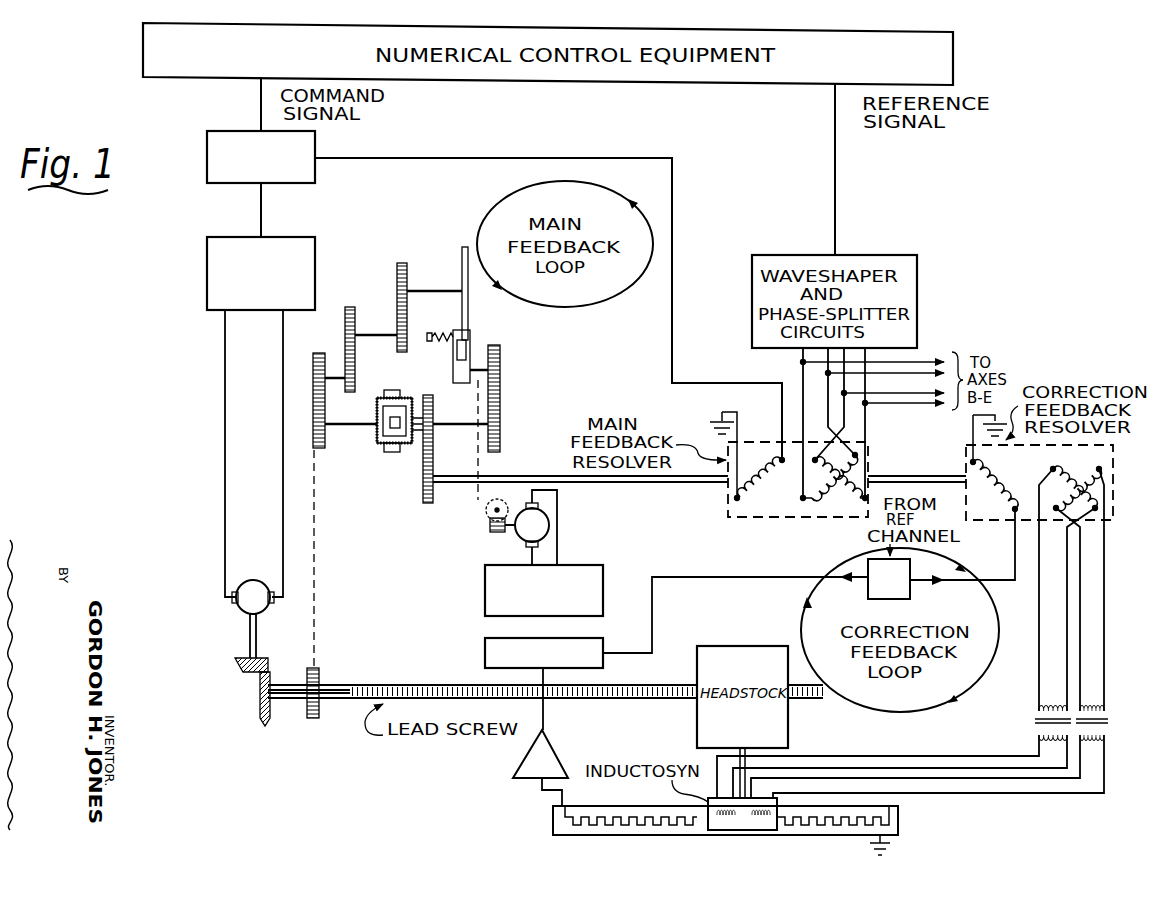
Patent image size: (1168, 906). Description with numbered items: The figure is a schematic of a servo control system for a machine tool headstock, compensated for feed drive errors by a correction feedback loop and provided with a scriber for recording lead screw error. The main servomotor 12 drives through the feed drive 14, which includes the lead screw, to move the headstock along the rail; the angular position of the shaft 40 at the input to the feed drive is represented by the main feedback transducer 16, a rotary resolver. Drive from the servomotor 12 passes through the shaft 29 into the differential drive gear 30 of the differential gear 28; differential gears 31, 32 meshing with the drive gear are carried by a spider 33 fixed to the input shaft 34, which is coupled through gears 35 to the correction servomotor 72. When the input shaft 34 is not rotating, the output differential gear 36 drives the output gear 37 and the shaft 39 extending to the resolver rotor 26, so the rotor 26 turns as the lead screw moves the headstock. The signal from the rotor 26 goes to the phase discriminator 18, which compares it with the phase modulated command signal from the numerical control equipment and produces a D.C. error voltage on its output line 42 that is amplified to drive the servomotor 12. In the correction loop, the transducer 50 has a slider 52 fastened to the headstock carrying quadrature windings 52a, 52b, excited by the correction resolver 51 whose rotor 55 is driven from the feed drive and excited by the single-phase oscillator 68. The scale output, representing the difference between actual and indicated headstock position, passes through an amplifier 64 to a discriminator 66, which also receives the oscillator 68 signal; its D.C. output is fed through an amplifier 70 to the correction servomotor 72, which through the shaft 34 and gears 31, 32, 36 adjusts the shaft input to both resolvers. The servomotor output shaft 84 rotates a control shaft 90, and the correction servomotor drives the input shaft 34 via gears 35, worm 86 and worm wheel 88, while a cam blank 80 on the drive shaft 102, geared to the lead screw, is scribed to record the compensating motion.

The servomotor 12 is at (232, 607).
The feed drive 14 is at (294, 723).
The main feedback transducer 16 is at (789, 487).
The phase discriminator 18 is at (316, 150).
The resolver rotor 26 is at (799, 483).
The differential gear 28 is at (380, 439).
The shaft 29 is at (333, 424).
The differential drive gear 30 is at (372, 435).
The differential gear 31 is at (378, 444).
The differential gear 32 is at (382, 399).
The spider 33 is at (398, 452).
The input shaft 34 is at (443, 426).
The gears 35 is at (444, 405).
The output differential gear 36 is at (412, 400).
The output gear 37 is at (428, 392).
The shaft 39 is at (536, 474).
The shaft 40 is at (247, 638).
The output line 42 is at (262, 218).
The transducer 50 is at (796, 793).
The correction resolver 51 is at (1017, 467).
The slider 52 is at (750, 829).
The winding 52a is at (728, 822).
The winding 52b is at (762, 822).
The rotor 55 is at (996, 484).
The amplifier 64 is at (513, 772).
The discriminator 66 is at (485, 652).
The single-phase oscillator 68 is at (868, 590).
The amplifier 70 is at (485, 592).
The correction servomotor 72 is at (549, 510).
The cam blank 80 is at (470, 312).
The servomotor output shaft 84 is at (512, 528).
The worm 86 is at (490, 530).
The worm wheel 88 is at (486, 513).
The control shaft 90 is at (483, 372).
The drive shaft 102 is at (428, 291).